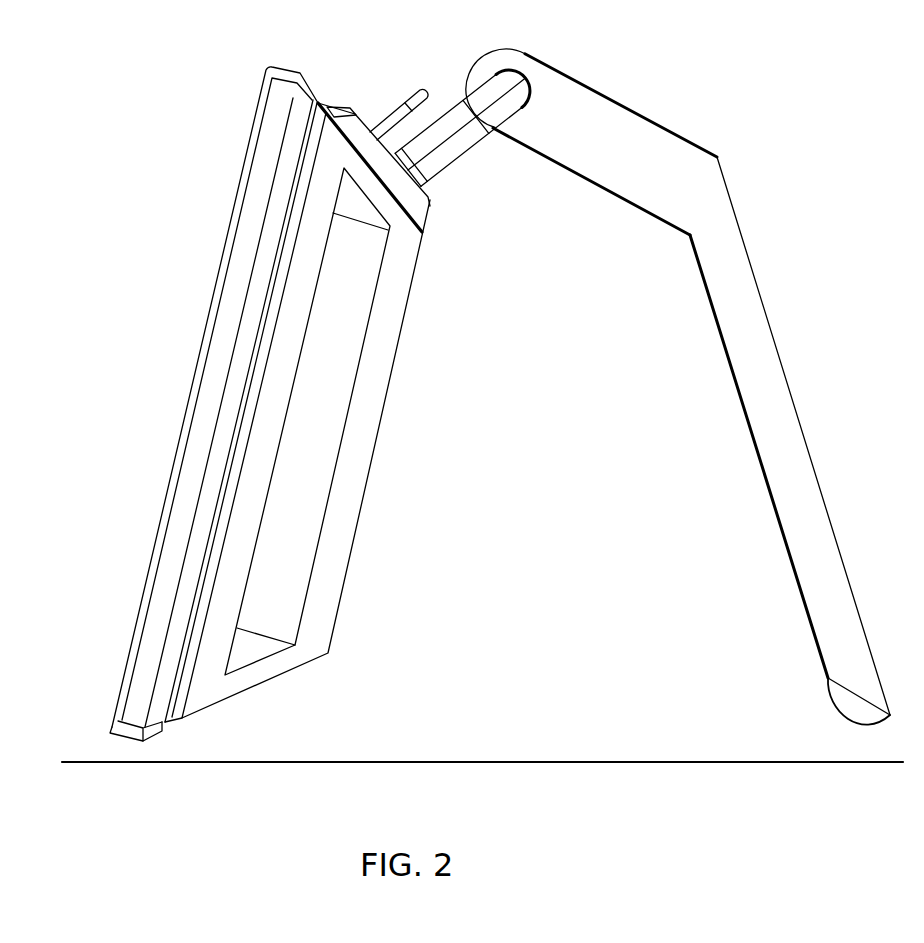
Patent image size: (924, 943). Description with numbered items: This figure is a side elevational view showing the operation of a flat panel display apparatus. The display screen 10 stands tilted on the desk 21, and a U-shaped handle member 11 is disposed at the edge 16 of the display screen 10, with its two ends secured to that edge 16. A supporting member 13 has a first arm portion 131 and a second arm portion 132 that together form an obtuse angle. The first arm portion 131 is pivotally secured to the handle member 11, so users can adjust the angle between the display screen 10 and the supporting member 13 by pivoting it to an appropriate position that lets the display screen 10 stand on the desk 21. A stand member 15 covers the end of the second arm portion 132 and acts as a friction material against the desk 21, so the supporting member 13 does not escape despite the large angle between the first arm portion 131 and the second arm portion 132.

The display screen 10 is at (238, 205).
The handle member 11 is at (447, 100).
The supporting member 13 is at (695, 392).
The first arm portion 131 is at (630, 113).
The second arm portion 132 is at (787, 383).
The stand member 15 is at (840, 722).
The edge 16 is at (427, 212).
The desk 21 is at (505, 760).